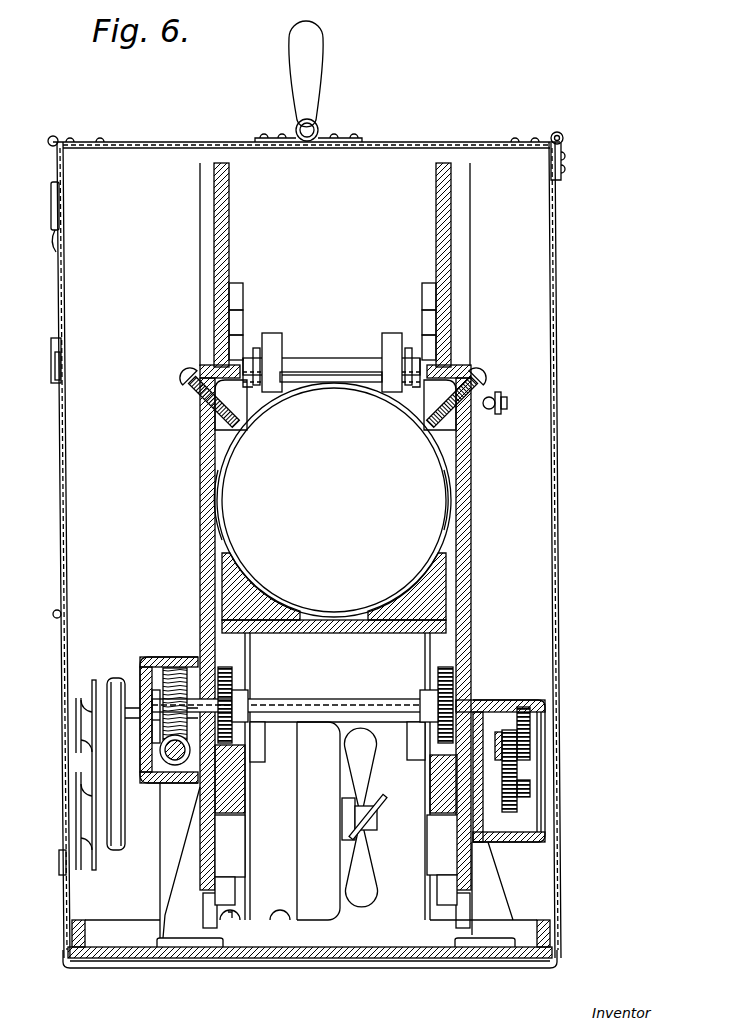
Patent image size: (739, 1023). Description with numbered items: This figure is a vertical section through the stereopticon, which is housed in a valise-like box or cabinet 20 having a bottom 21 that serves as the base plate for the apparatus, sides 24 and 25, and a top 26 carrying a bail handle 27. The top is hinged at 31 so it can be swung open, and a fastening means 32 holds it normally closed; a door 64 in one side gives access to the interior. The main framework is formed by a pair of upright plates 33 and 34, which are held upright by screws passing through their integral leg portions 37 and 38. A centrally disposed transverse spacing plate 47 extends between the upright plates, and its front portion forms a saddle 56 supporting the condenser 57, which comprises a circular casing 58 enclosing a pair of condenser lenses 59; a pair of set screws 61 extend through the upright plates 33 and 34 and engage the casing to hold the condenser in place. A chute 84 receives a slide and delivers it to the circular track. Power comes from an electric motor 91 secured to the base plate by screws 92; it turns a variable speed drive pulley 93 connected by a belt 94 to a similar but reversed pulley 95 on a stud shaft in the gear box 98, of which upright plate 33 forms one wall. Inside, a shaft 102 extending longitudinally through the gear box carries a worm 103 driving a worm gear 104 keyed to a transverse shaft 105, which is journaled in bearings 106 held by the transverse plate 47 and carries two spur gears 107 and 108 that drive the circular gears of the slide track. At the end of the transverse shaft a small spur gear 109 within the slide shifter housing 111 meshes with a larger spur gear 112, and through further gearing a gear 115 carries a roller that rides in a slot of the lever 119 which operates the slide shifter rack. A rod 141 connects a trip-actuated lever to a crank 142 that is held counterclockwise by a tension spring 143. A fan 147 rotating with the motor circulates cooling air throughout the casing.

The box or cabinet 20 is at (434, 142).
The bottom 21 is at (272, 958).
The side 24 is at (557, 290).
The side 25 is at (58, 282).
The top 26 is at (380, 141).
The bail handle 27 is at (315, 65).
The hinge 31 is at (563, 138).
The fastening means 32 is at (51, 215).
The upright plate 33 is at (200, 428).
The upright plate 34 is at (471, 458).
The leg portions 37 is at (181, 910).
The leg portions 38 is at (497, 901).
The transverse spacing plate 47 is at (348, 633).
The saddle 56 is at (256, 602).
The condenser 57 is at (217, 470).
The circular casing 58 is at (441, 522).
The condenser lenses 59 is at (422, 532).
The set screws 61 is at (186, 378).
The door 64 is at (56, 408).
The chute 84 is at (245, 804).
The electric motor 91 is at (322, 896).
The screws 92 is at (246, 947).
The variable speed drive pulley 93 is at (84, 812).
The belt 94 is at (116, 678).
The pulley 95 is at (94, 694).
The gear box 98 is at (198, 796).
The shaft 102 is at (189, 758).
The worm 103 is at (173, 784).
The worm gear 104 is at (166, 657).
The transverse shaft 105 is at (316, 702).
The bearings 106 is at (243, 698).
The spur gear 107 is at (233, 683).
The spur gear 108 is at (438, 682).
The small spur gear 109 is at (525, 702).
The housing 111 is at (546, 812).
The larger spur gear 112 is at (531, 738).
The gear 115 is at (531, 797).
The lever 119 is at (507, 800).
The rod 141 is at (492, 398).
The crank 142 is at (506, 404).
The tension spring 143 is at (505, 408).
The fan 147 is at (369, 768).